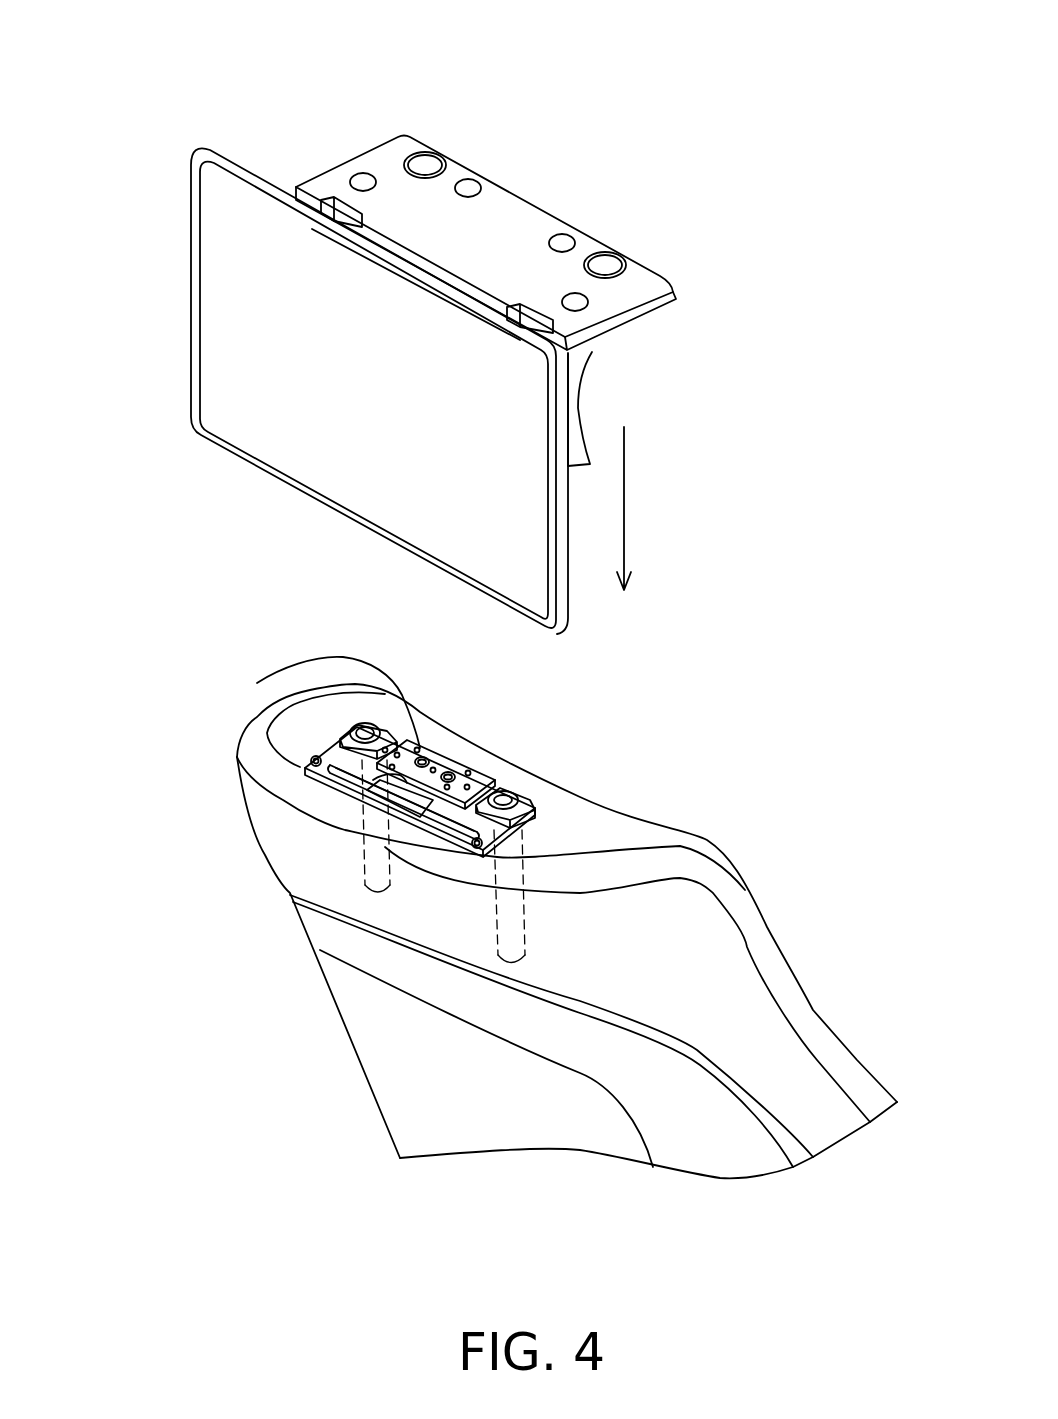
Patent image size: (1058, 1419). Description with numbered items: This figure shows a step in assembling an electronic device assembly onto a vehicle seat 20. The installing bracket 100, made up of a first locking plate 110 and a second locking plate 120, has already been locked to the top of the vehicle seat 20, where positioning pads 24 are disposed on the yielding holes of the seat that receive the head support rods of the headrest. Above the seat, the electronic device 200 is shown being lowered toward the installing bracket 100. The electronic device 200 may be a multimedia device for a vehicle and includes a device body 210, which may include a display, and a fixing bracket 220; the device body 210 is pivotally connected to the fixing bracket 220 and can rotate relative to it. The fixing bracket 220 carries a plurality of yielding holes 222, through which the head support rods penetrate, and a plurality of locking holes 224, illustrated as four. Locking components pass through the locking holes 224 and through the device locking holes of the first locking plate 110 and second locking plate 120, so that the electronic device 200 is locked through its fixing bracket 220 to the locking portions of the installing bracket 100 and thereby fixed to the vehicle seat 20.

The vehicle seat 20 is at (793, 970).
The positioning pad 24 is at (527, 790).
The installing bracket 100 is at (106, 750).
The first locking plate 110 is at (257, 683).
The second locking plate 120 is at (390, 807).
The electronic device 200 is at (568, 137).
The device body 210 is at (333, 367).
The fixing bracket 220 is at (393, 160).
The yielding hole 222 is at (427, 158).
The locking hole 224 is at (357, 165).